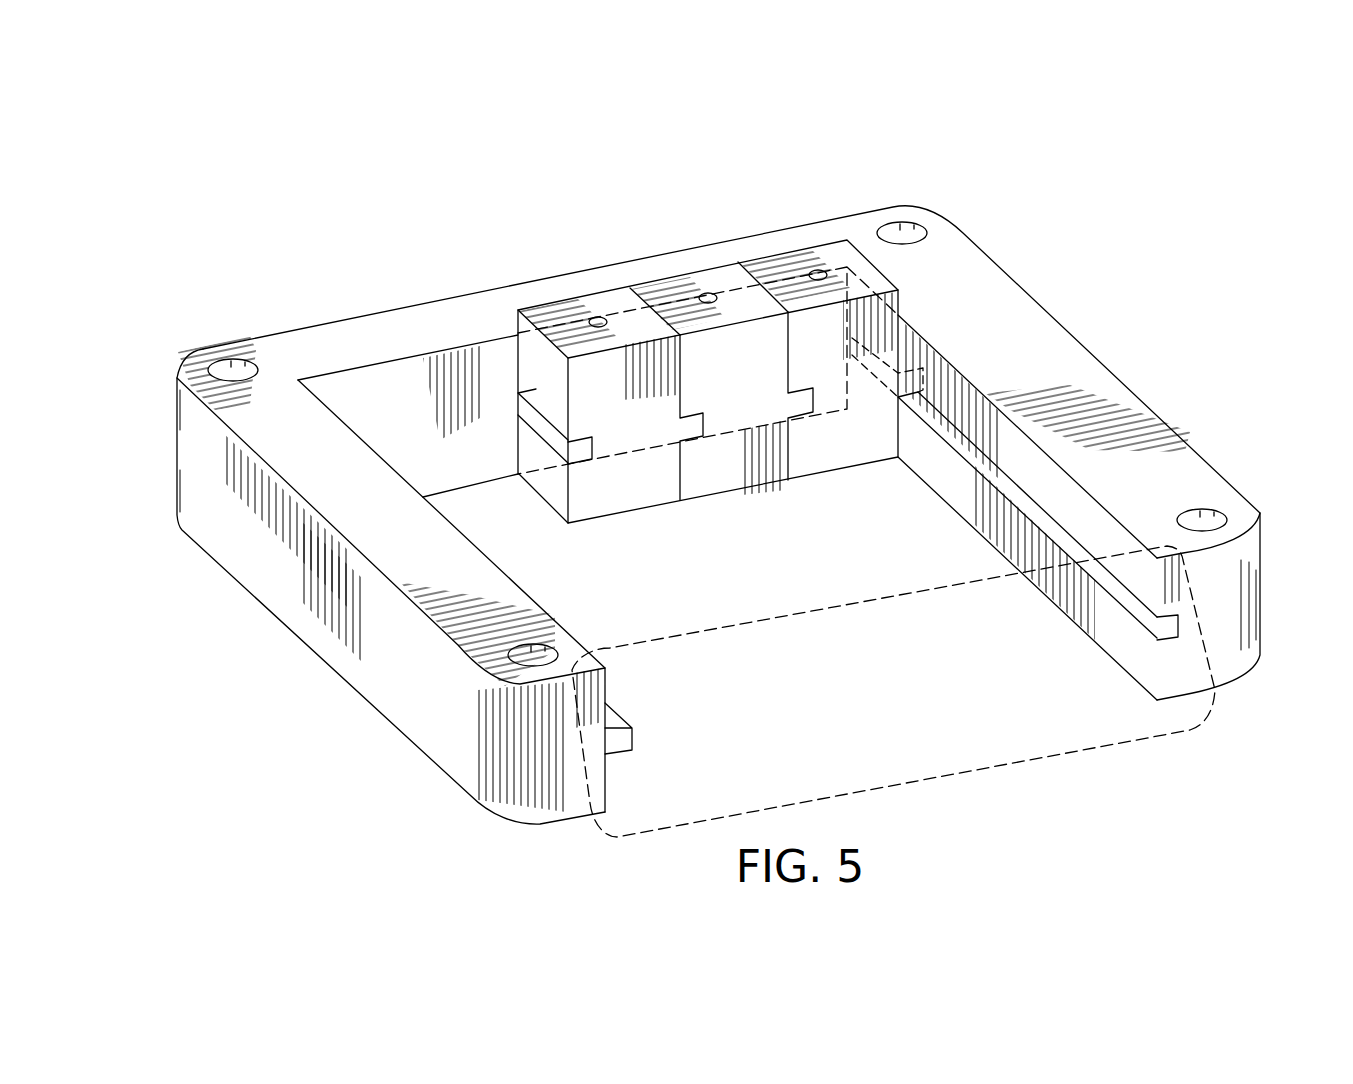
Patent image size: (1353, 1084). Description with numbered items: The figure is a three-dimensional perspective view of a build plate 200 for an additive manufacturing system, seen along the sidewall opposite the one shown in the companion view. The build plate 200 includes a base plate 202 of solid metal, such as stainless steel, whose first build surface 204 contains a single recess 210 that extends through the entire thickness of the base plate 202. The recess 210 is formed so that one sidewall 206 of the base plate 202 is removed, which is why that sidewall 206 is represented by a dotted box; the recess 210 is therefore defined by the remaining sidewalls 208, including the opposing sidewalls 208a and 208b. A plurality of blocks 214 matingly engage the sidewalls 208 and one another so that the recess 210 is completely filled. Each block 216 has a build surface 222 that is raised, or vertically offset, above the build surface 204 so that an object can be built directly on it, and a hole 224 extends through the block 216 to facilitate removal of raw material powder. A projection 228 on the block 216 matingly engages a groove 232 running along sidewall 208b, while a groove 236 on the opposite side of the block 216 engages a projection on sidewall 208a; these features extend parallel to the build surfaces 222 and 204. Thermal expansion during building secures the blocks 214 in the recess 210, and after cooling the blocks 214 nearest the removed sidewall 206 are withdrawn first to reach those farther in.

The build plate 200 is at (226, 209).
The base plate 202 is at (335, 725).
The first build surface 204 is at (1152, 430).
The sidewall 206 is at (913, 773).
The remaining sidewalls 208 is at (727, 444).
The sidewall 208a is at (557, 617).
The sidewall 208b is at (986, 429).
The recess 210 is at (480, 433).
The plurality of blocks 214 is at (703, 362).
The block 216 is at (624, 287).
The build surface 222 is at (562, 322).
The hole 224 is at (598, 316).
The projection 228 is at (910, 373).
The groove 232 is at (1150, 620).
The groove 236 is at (568, 450).